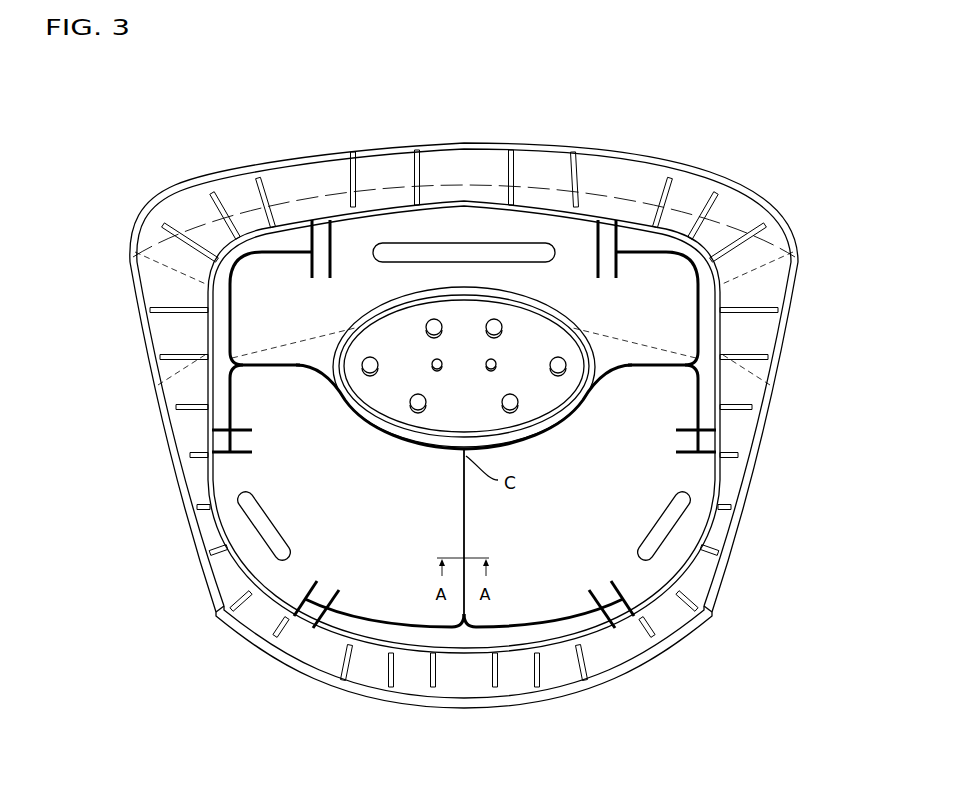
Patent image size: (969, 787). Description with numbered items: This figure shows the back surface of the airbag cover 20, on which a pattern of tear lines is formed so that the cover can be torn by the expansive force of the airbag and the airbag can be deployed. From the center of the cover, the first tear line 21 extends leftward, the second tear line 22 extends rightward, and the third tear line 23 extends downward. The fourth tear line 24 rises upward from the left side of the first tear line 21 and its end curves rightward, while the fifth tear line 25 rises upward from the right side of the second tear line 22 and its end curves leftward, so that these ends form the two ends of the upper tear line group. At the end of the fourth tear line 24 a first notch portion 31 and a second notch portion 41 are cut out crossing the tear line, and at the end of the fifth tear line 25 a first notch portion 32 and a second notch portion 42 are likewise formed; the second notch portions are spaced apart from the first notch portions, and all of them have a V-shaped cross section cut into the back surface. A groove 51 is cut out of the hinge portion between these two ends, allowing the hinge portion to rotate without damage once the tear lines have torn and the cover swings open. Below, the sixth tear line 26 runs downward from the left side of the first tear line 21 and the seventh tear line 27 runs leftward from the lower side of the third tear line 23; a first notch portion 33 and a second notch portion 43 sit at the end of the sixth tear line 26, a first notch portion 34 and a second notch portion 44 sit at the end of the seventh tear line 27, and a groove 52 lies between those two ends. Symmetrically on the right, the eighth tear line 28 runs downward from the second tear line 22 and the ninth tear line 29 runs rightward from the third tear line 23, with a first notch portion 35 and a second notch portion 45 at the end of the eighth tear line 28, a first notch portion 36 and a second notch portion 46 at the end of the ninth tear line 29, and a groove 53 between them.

The airbag cover 20 is at (766, 167).
The first tear line 21 is at (356, 426).
The second tear line 22 is at (546, 434).
The third tear line 23 is at (462, 518).
The fourth tear line 24 is at (232, 312).
The fifth tear line 25 is at (696, 310).
The sixth tear line 26 is at (232, 389).
The seventh tear line 27 is at (372, 622).
The eighth tear line 28 is at (696, 390).
The ninth tear line 29 is at (537, 621).
The first notch portion 31 is at (329, 218).
The first notch portion 32 is at (597, 238).
The first notch portion 33 is at (214, 461).
The first notch portion 34 is at (294, 616).
The first notch portion 35 is at (712, 449).
The first notch portion 36 is at (636, 616).
The second notch portion 41 is at (305, 240).
The second notch portion 42 is at (617, 222).
The second notch portion 43 is at (214, 437).
The second notch portion 44 is at (326, 620).
The second notch portion 45 is at (702, 431).
The second notch portion 46 is at (618, 628).
The groove 51 is at (463, 250).
The groove 52 is at (262, 528).
The groove 53 is at (667, 524).